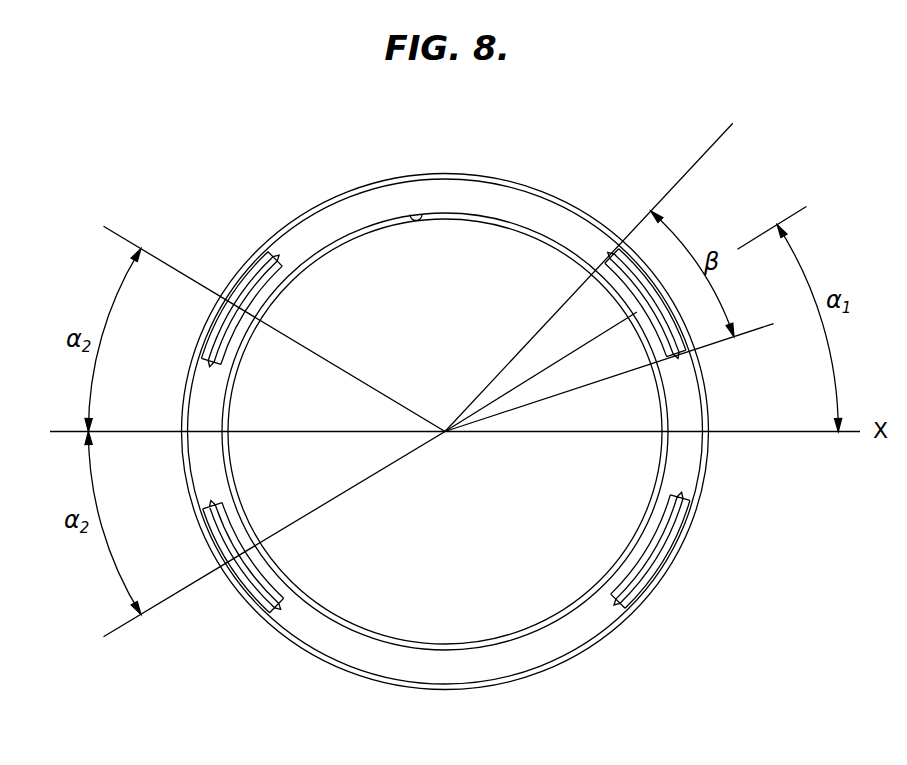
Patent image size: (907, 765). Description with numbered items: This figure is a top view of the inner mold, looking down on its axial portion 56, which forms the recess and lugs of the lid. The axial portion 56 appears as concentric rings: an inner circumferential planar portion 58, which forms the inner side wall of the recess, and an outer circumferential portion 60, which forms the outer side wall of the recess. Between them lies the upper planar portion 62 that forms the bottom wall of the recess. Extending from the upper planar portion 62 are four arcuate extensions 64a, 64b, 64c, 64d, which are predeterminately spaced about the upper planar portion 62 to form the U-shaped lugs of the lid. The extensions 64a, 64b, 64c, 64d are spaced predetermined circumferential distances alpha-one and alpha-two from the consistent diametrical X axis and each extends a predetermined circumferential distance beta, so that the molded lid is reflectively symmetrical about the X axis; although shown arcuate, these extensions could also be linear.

The axial portion 56 is at (445, 408).
The circumferential planar portion 58 is at (423, 220).
The circumferential portion 60 is at (303, 209).
The upper planar portion 62 is at (352, 205).
The extension 64a is at (268, 264).
The extension 64b is at (254, 584).
The extension 64c is at (653, 552).
The extension 64d is at (617, 258).